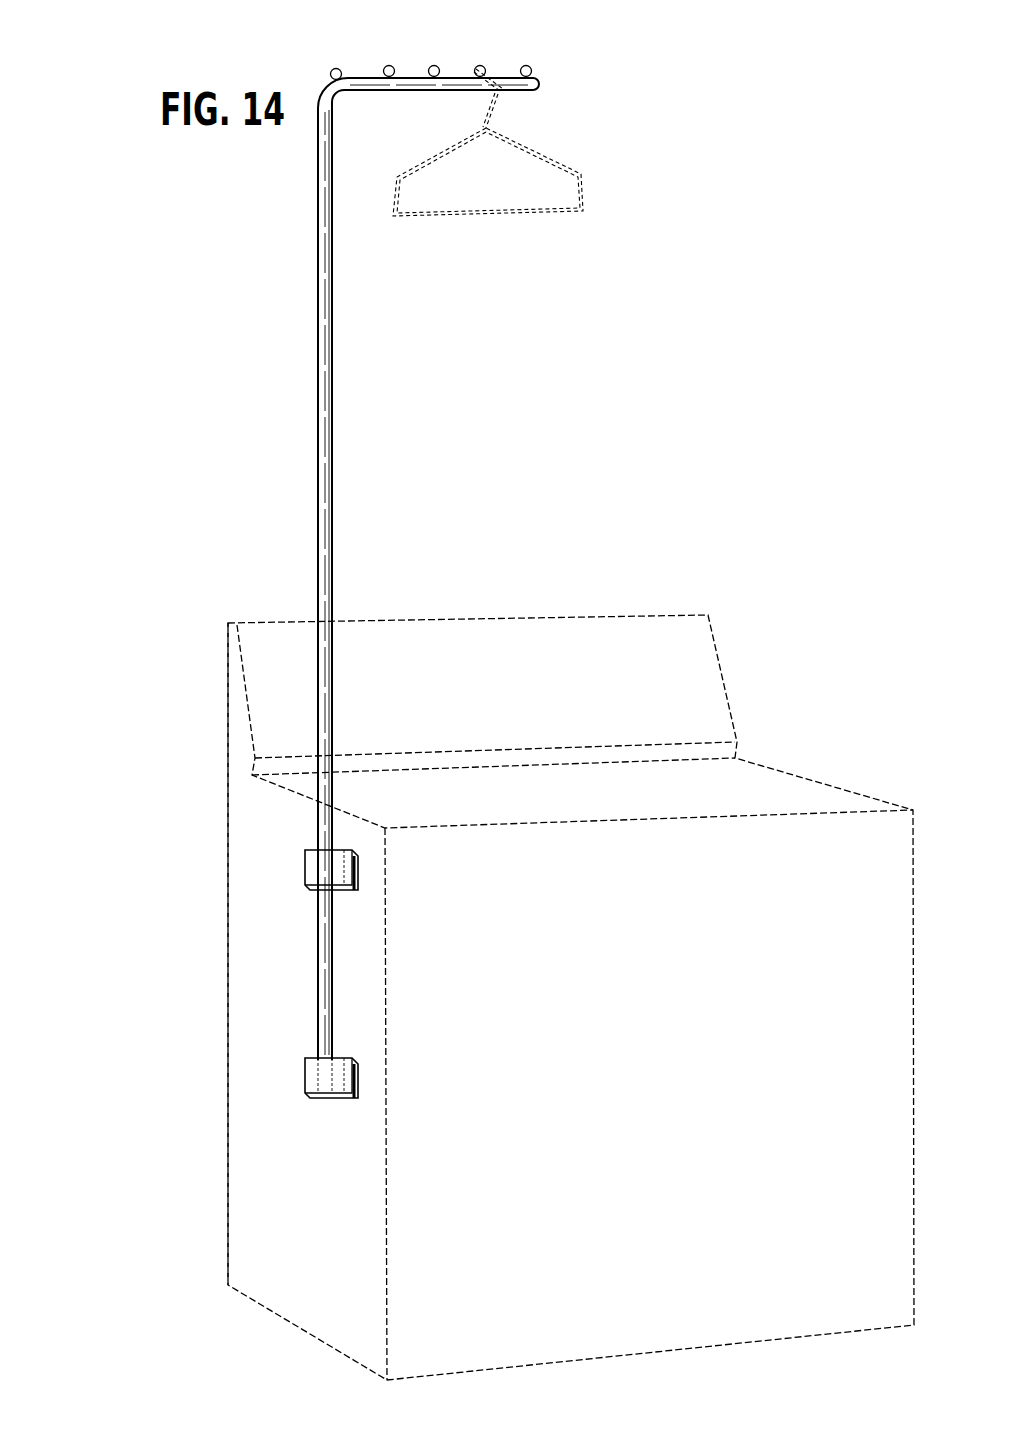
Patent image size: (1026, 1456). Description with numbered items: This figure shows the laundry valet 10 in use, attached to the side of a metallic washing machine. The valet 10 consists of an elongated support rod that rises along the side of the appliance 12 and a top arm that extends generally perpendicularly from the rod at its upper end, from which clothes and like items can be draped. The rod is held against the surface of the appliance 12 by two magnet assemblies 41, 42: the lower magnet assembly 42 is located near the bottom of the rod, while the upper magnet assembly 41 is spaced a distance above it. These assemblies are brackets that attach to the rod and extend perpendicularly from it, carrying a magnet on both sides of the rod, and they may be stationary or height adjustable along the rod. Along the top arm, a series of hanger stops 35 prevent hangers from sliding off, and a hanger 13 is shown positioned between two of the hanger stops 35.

The laundry valet rod 10 is at (198, 325).
The appliance 12 is at (252, 1183).
The hanger 13 is at (560, 163).
The hanger stops 35 is at (332, 70).
The upper magnet assembly 41 is at (317, 866).
The lower magnet assembly 42 is at (317, 1081).